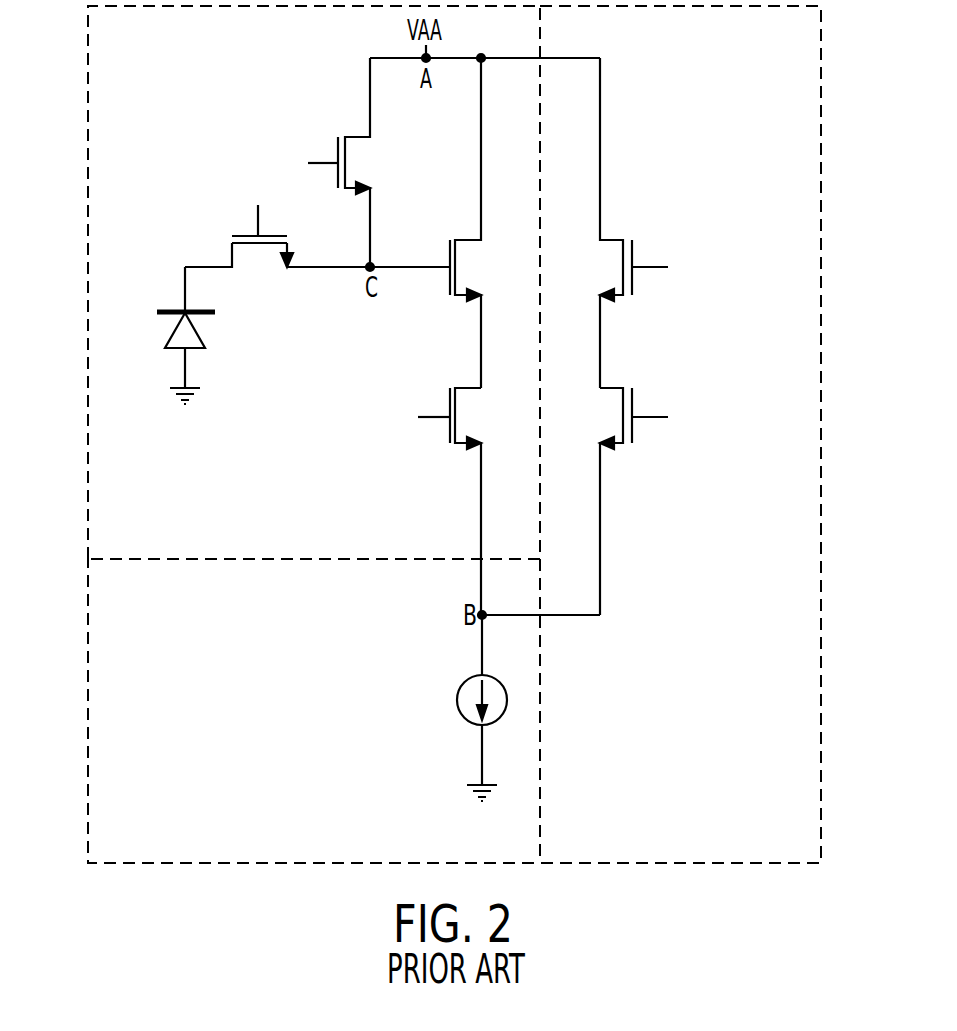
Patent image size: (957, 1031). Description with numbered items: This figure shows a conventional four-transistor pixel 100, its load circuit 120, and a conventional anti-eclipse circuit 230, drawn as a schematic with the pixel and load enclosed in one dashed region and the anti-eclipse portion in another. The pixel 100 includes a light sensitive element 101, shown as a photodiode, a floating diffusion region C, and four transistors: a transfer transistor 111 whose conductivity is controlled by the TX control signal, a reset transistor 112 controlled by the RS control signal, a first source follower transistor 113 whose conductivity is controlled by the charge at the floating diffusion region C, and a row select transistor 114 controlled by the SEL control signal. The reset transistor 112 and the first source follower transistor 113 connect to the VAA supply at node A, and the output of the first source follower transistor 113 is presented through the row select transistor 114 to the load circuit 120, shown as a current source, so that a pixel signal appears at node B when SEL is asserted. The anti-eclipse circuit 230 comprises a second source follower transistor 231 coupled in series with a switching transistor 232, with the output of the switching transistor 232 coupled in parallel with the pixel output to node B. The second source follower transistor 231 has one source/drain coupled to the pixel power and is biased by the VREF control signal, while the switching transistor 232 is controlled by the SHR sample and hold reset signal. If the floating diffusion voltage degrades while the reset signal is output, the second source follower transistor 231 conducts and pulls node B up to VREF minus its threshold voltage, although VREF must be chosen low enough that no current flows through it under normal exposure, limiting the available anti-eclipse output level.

The pixel 100 is at (86, 218).
The light sensitive element 101 is at (187, 337).
The transfer transistor 111 is at (230, 258).
The reset transistor 112 is at (353, 127).
The first source follower transistor 113 is at (467, 238).
The row select transistor 114 is at (467, 388).
The load circuit 120 is at (457, 700).
The anti-eclipse circuit 230 is at (824, 220).
The second source follower transistor 231 is at (613, 238).
The switching transistor 232 is at (613, 388).